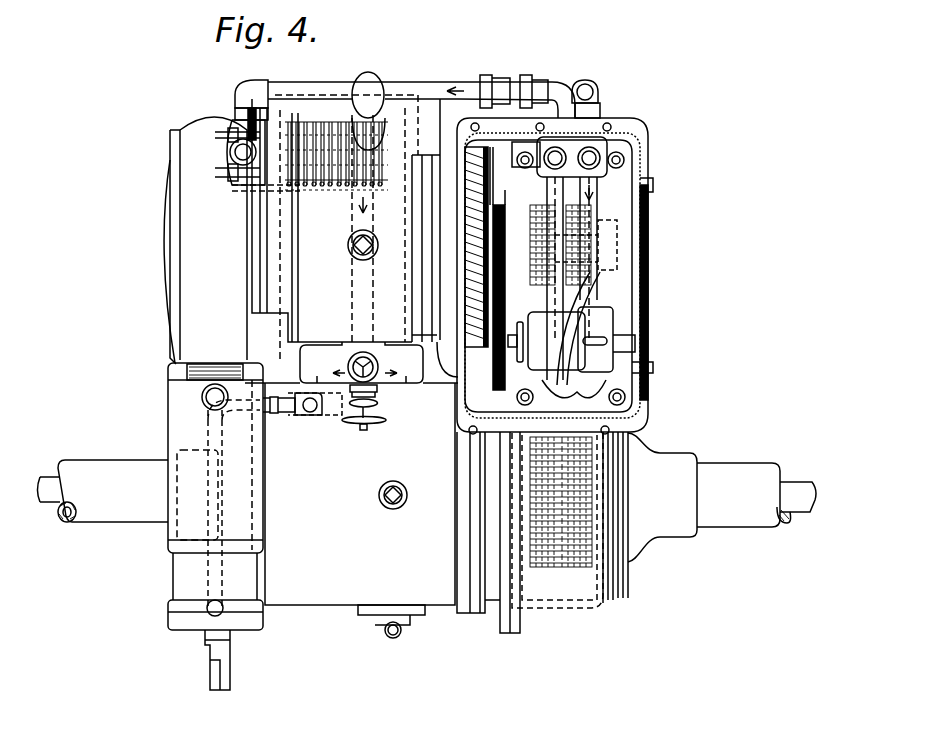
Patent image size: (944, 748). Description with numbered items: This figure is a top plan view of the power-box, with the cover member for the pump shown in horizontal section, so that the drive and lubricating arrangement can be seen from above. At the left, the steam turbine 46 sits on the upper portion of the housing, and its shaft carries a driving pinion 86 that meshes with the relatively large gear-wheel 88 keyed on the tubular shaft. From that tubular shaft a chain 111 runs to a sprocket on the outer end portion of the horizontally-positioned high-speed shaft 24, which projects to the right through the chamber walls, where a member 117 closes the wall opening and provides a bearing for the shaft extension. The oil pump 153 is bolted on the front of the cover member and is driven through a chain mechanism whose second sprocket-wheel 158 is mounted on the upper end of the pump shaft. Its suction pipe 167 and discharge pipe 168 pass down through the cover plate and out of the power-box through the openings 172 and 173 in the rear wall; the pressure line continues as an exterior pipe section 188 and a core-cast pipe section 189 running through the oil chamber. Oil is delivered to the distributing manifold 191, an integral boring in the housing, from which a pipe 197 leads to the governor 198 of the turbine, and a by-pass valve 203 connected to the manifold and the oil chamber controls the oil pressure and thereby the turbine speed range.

The steam turbine 46 is at (193, 258).
The pipe section 188 is at (462, 66).
The opening 173 is at (560, 110).
The opening 172 is at (605, 122).
The discharge pipe 168 is at (550, 193).
The gear-wheel 88 is at (465, 210).
The driving pinion 86 is at (465, 244).
The pipe section 189 is at (365, 215).
The sprocket-wheel 158 is at (410, 303).
The suction pipe 167 is at (595, 292).
The oil pump 153 is at (623, 347).
The distributing manifold 191 is at (398, 383).
The by-pass valve 203 is at (353, 428).
The pipe 197 is at (178, 500).
The governor 198 is at (183, 577).
The chain 111 is at (567, 563).
The member 117 is at (675, 530).
The high-speed shaft 24 is at (802, 502).